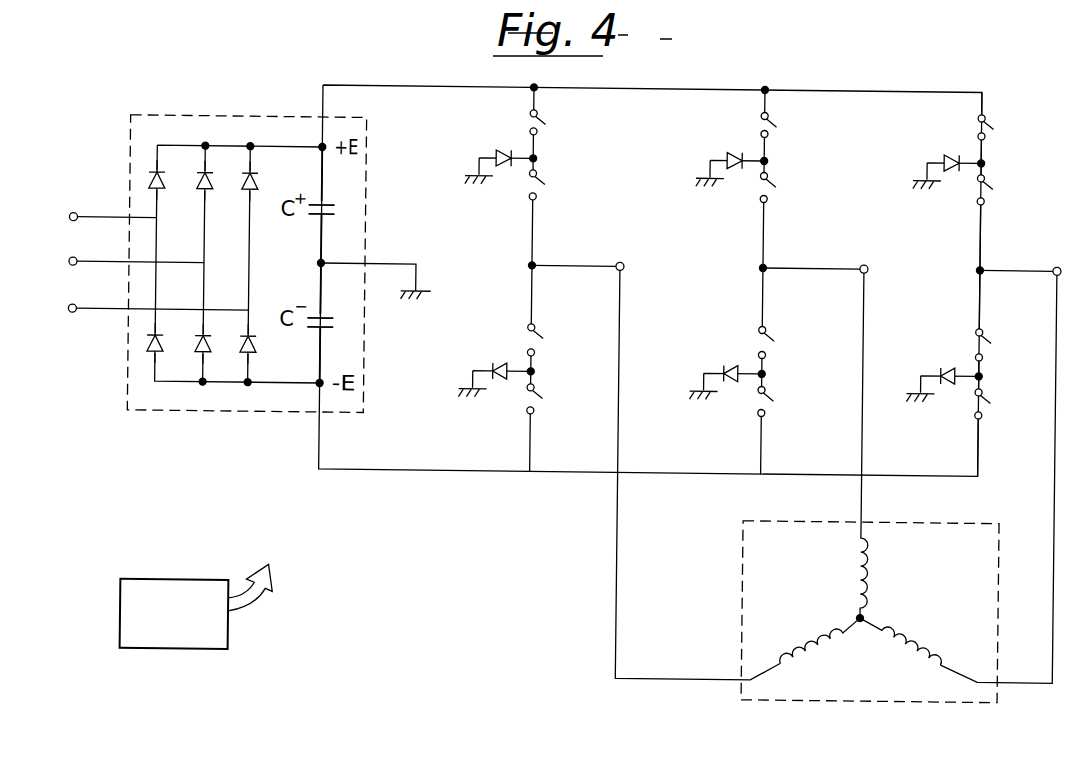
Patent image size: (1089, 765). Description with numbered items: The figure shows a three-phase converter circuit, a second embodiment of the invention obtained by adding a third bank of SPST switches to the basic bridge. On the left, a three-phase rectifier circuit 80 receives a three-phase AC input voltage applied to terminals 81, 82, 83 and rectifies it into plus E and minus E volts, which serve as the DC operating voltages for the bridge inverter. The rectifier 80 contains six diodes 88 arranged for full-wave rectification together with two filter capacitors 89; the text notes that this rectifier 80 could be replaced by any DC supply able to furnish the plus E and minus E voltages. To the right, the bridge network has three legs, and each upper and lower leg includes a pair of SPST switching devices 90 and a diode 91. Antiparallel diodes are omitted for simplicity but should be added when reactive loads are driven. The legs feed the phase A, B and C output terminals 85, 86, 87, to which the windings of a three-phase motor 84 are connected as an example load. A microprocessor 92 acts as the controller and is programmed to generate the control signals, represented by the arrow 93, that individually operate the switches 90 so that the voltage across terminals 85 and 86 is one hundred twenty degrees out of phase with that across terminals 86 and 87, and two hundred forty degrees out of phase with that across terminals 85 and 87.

The three-phase rectifier circuit 80 is at (257, 117).
The AC input terminal 81 is at (79, 219).
The AC input terminal 82 is at (79, 264).
The AC input terminal 83 is at (79, 311).
The three-phase motor 84 is at (963, 704).
The phase A output terminal 85 is at (627, 262).
The phase B output terminal 86 is at (871, 262).
The phase C output terminal 87 is at (1064, 262).
The diodes 88 is at (265, 358).
The filter capacitors 89 is at (355, 298).
The SPST switching devices 90 is at (546, 118).
The diode 91 is at (503, 148).
The microprocessor 92 is at (143, 581).
The arrow 93 is at (251, 577).